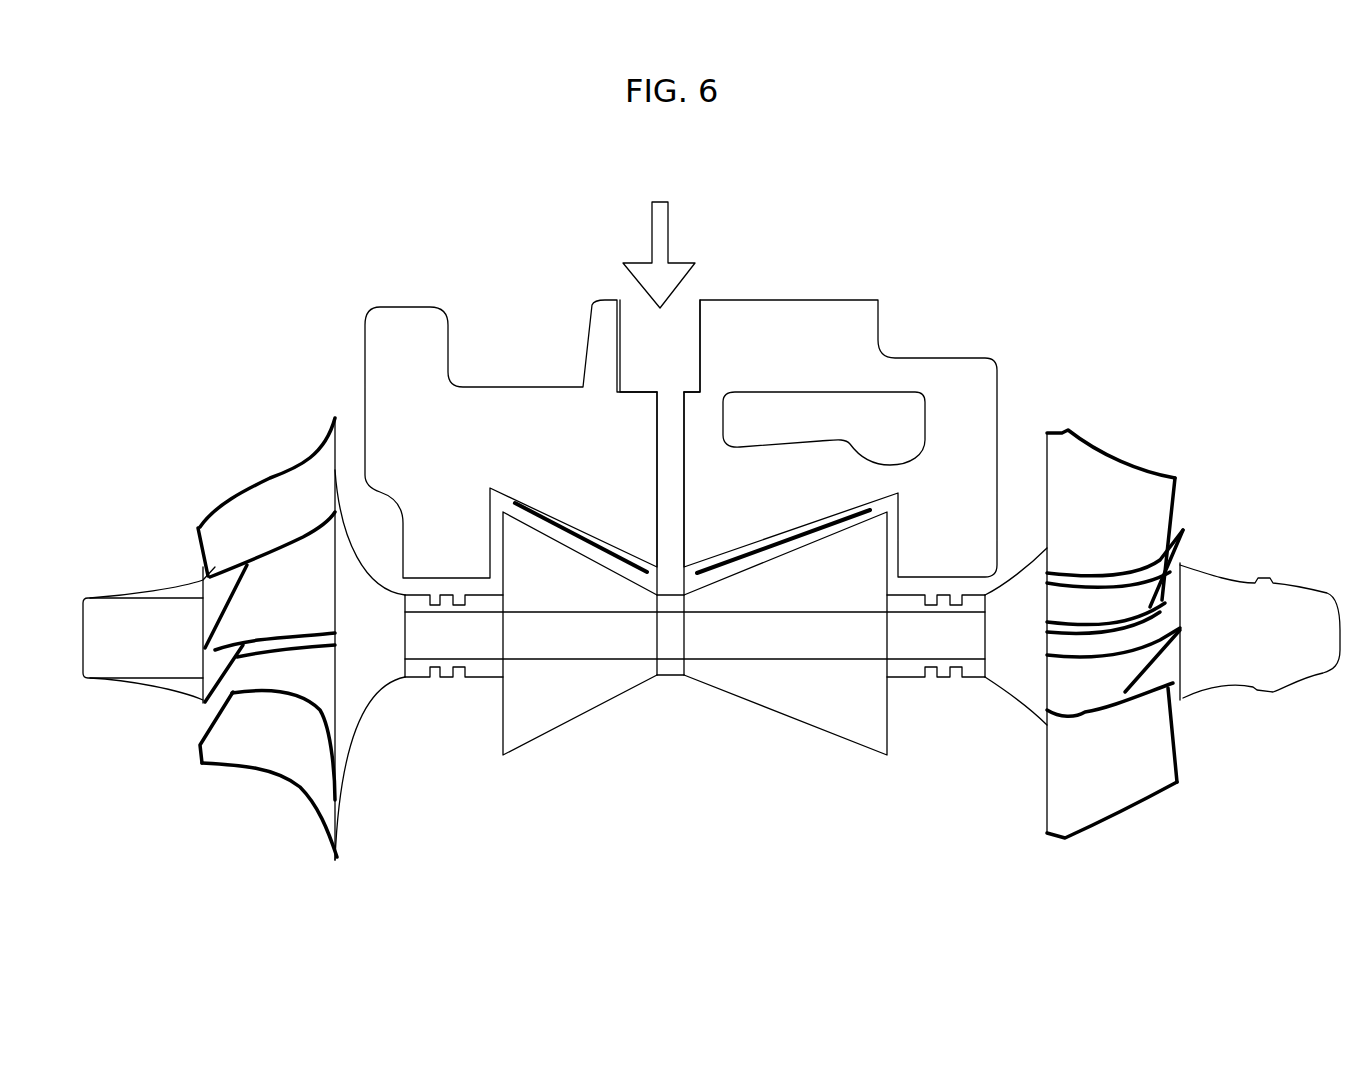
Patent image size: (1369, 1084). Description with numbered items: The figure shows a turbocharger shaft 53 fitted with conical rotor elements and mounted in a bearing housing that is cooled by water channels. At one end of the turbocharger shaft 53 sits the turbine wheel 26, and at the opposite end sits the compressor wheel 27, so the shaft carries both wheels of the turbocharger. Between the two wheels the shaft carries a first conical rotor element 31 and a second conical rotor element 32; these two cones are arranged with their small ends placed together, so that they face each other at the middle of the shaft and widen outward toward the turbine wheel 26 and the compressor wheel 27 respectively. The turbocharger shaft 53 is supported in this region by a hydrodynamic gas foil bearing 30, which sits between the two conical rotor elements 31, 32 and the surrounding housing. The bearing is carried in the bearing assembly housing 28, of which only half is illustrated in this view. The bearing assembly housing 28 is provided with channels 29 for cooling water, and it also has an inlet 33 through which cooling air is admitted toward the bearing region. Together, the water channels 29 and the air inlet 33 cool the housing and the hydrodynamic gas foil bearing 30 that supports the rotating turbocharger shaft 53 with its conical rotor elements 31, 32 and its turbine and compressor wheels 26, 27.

The turbine wheel 26 is at (1133, 452).
The compressor wheel 27 is at (268, 775).
The bearing assembly housing 28 is at (968, 340).
The channels 29 is at (877, 415).
The hydrodynamic gas foil bearing 30 is at (627, 553).
The first conical rotor element 31 is at (797, 735).
The second conical rotor element 32 is at (542, 745).
The inlet 33 is at (636, 318).
The turbocharger shaft 53 is at (910, 680).